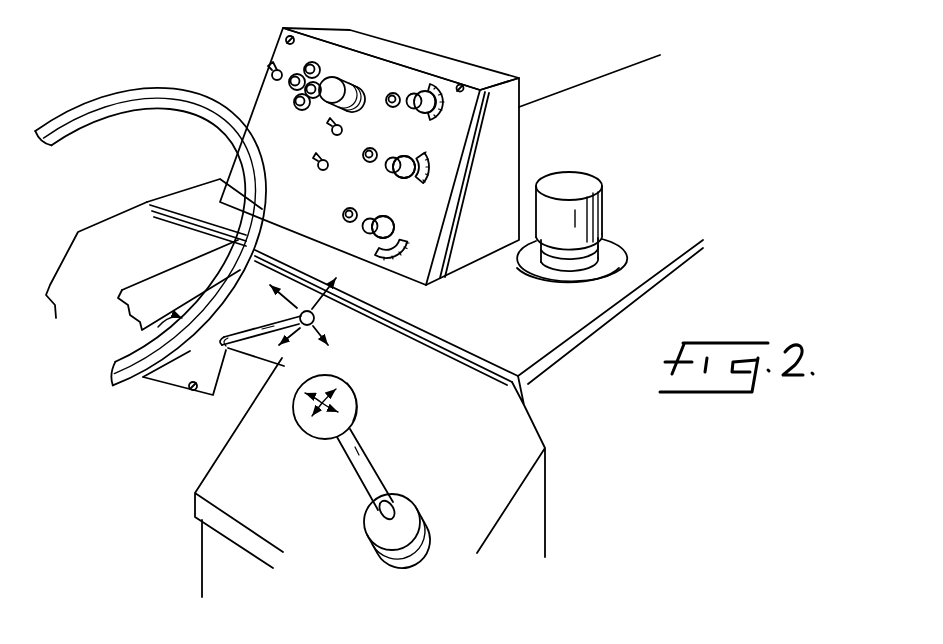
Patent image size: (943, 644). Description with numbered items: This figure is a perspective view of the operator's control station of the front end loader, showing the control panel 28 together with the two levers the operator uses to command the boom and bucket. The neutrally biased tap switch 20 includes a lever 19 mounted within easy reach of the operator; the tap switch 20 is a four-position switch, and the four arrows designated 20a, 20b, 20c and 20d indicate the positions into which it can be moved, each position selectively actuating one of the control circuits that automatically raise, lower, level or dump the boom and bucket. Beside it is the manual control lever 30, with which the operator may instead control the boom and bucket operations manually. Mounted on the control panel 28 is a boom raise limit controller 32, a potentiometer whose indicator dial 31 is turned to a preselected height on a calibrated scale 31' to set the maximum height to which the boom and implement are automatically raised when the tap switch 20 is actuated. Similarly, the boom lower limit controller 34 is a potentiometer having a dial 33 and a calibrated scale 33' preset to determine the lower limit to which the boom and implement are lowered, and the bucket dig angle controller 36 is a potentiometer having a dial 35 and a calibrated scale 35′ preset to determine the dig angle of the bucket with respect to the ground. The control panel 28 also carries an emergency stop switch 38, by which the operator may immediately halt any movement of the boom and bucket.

The lever 19 is at (217, 391).
The tap switch 20 is at (303, 342).
The tap switch position 20a is at (286, 300).
The tap switch position 20b is at (323, 308).
The tap switch position 20c is at (330, 350).
The tap switch position 20d is at (285, 366).
The control panel 28 is at (521, 61).
The manual control lever 30 is at (371, 475).
The indicator dial 31 is at (404, 88).
The calibrated scale 31' is at (441, 67).
The boom raise limit controller 32 is at (454, 79).
The dial 33 is at (348, 224).
The calibrated scale 33' is at (405, 281).
The boom lower limit controller 34 is at (407, 222).
The dial 35 is at (388, 168).
The calibrated scale 35′ is at (506, 173).
The bucket dig angle controller 36 is at (424, 151).
The emergency stop switch 38 is at (327, 101).